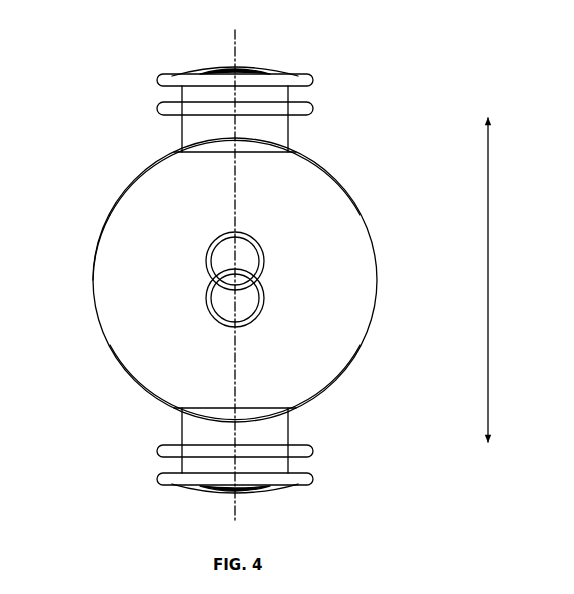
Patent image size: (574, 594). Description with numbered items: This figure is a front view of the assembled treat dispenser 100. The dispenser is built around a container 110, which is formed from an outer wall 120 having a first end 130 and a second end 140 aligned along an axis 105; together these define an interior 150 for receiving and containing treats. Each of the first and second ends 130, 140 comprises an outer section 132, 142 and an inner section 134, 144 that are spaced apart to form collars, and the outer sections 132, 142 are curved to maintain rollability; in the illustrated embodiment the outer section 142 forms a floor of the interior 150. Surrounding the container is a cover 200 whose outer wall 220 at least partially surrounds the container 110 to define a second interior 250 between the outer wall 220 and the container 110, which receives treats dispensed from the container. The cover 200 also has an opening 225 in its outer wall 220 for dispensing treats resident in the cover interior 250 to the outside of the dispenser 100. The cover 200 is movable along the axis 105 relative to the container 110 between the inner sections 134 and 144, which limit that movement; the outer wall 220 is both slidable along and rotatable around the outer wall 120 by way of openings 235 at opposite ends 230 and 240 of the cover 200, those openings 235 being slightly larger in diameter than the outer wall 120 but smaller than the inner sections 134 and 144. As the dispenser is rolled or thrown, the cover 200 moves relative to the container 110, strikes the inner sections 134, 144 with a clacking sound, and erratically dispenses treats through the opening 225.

The treat dispenser 100 is at (96, 51).
The axis 105 is at (235, 507).
The container 110 is at (182, 130).
The outer wall 120 is at (182, 427).
The first end 130 is at (294, 83).
The outer section 132 is at (307, 80).
The inner section 134 is at (307, 111).
The second end 140 is at (242, 468).
The outer section 142 is at (160, 477).
The inner section 144 is at (160, 448).
The interior 150 is at (283, 133).
The cover 200 is at (130, 198).
The outer wall 220 is at (92, 274).
The opening 225 is at (192, 311).
The end 230 is at (348, 158).
The openings 235 is at (182, 150).
The end 240 is at (366, 390).
The second interior 250 is at (222, 260).